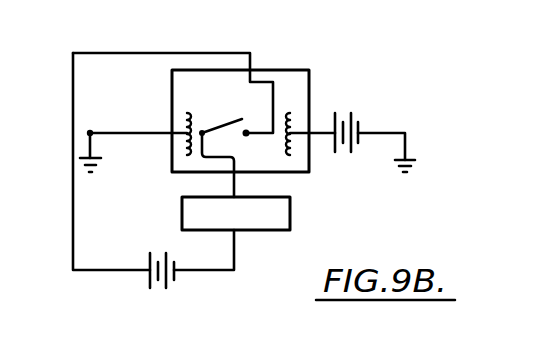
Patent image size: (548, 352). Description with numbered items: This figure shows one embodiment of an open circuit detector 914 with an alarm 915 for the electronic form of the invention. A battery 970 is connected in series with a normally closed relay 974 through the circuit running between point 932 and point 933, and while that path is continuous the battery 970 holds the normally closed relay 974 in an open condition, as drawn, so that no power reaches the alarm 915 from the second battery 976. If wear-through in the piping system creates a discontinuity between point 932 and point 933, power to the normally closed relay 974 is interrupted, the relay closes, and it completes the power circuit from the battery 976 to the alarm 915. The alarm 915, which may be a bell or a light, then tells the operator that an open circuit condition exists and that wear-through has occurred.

The open circuit detector 914 is at (266, 178).
The alarm 915 is at (290, 217).
The point 932 is at (91, 131).
The point 933 is at (132, 135).
The battery 970 is at (350, 105).
The normally closed relay 974 is at (303, 70).
The battery 976 is at (138, 288).